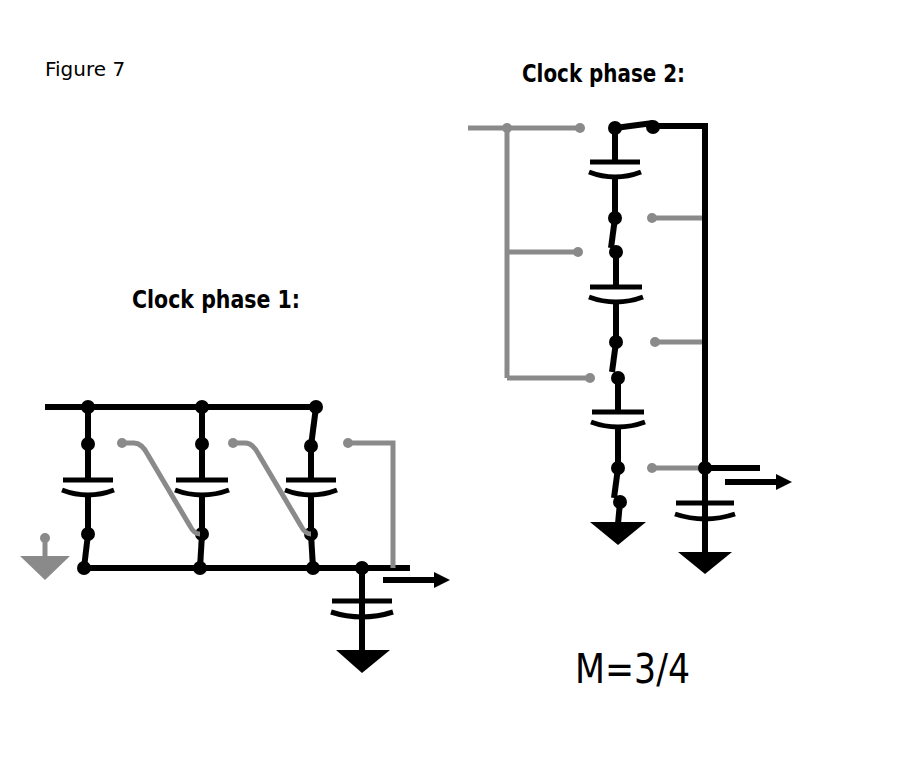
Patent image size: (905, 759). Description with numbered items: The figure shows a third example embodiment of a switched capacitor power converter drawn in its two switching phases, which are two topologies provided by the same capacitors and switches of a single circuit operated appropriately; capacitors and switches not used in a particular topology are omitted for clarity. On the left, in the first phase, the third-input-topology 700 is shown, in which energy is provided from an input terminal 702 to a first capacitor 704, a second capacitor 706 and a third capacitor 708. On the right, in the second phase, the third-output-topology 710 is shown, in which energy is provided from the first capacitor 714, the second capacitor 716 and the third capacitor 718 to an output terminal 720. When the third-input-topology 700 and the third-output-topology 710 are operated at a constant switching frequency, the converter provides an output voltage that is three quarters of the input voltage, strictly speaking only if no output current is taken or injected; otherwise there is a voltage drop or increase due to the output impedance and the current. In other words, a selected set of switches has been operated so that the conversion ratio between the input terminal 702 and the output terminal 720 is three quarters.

The third-input-topology 700 is at (313, 368).
The input terminal 702 is at (78, 404).
The first capacitor 704 is at (78, 478).
The second capacitor 706 is at (190, 478).
The third capacitor 708 is at (298, 478).
The third-output-topology 710 is at (775, 169).
The first capacitor 714 is at (603, 184).
The second capacitor 716 is at (603, 305).
The third capacitor 718 is at (603, 428).
The output terminal 720 is at (718, 462).